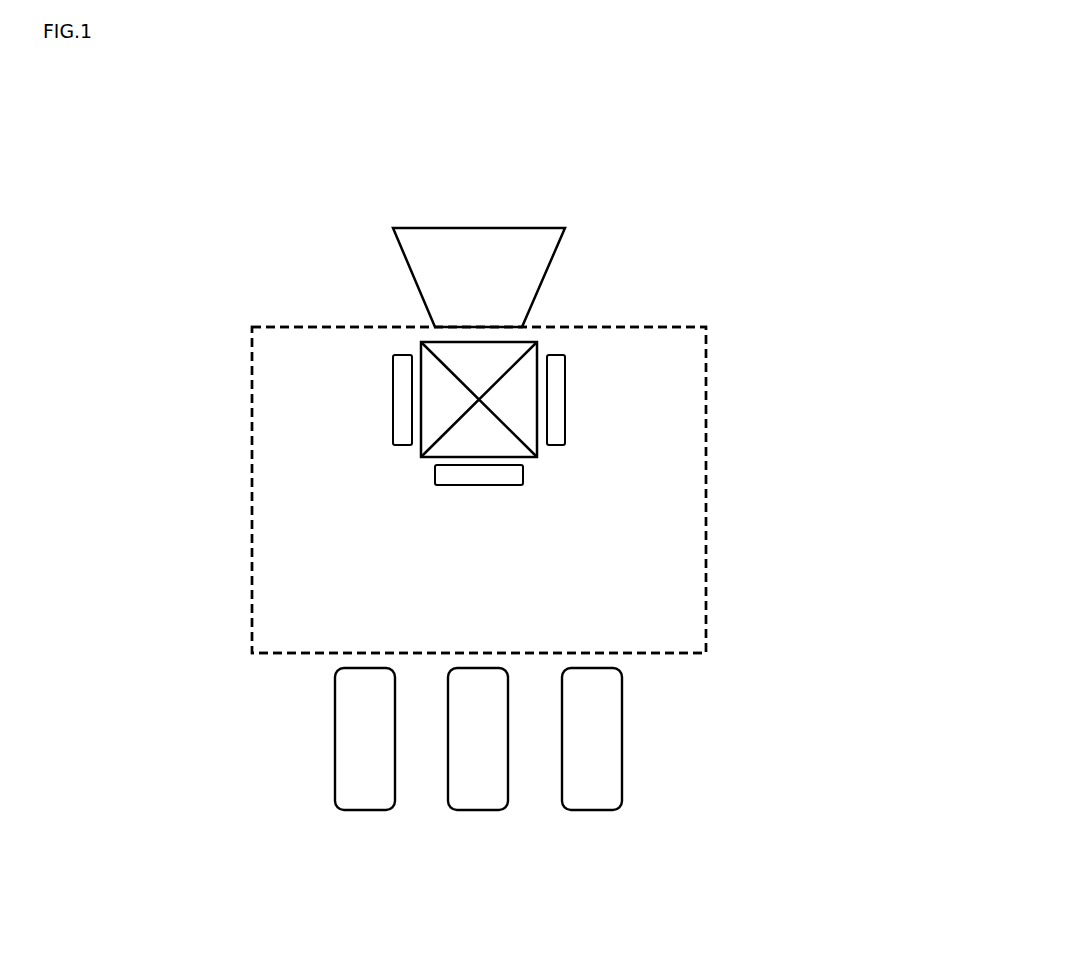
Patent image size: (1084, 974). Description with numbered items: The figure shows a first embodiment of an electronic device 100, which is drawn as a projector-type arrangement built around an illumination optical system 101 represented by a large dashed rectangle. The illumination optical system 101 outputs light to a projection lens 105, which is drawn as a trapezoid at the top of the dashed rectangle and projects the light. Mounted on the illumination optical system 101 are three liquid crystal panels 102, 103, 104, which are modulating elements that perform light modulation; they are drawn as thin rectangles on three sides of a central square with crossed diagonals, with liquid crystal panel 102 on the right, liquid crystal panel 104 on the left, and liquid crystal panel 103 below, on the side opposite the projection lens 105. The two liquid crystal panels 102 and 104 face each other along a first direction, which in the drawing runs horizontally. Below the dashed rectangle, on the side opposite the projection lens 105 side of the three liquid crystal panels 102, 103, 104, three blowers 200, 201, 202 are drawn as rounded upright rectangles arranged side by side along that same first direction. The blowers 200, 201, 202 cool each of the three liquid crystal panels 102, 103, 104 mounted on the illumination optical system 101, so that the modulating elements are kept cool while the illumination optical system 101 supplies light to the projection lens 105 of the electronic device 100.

The electronic device 100 is at (257, 200).
The illumination optical system 101 is at (252, 430).
The liquid crystal panel 102 is at (560, 358).
The liquid crystal panel 103 is at (503, 472).
The liquid crystal panel 104 is at (405, 370).
The projection lens 105 is at (537, 240).
The blower 200 is at (590, 797).
The blower 201 is at (478, 797).
The blower 202 is at (363, 797).